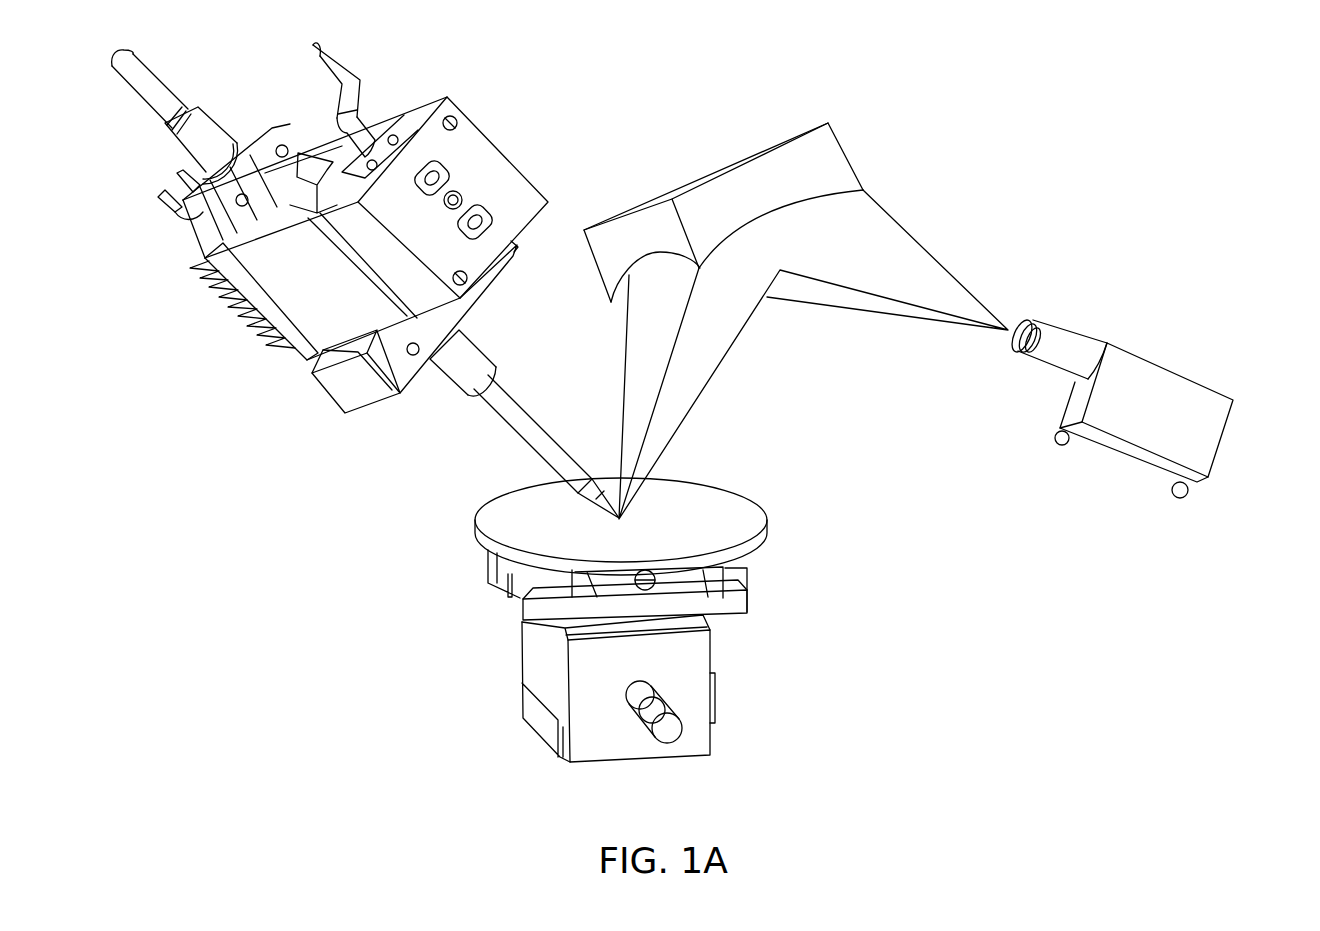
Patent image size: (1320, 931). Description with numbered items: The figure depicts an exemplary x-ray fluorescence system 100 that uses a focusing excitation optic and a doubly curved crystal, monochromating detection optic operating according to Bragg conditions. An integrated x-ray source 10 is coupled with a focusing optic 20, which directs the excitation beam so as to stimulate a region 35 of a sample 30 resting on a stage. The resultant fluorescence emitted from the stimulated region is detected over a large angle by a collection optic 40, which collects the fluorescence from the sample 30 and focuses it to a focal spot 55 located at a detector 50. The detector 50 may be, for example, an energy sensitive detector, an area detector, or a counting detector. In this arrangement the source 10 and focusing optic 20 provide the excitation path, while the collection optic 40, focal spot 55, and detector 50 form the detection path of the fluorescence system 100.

The x-ray source 10 is at (290, 348).
The focusing optic 20 is at (542, 447).
The sample 30 is at (750, 547).
The region 35 is at (613, 526).
The collection optic 40 is at (845, 150).
The detector 50 is at (1187, 372).
The focal spot 55 is at (1001, 352).
The fluorescence system 100 is at (953, 687).